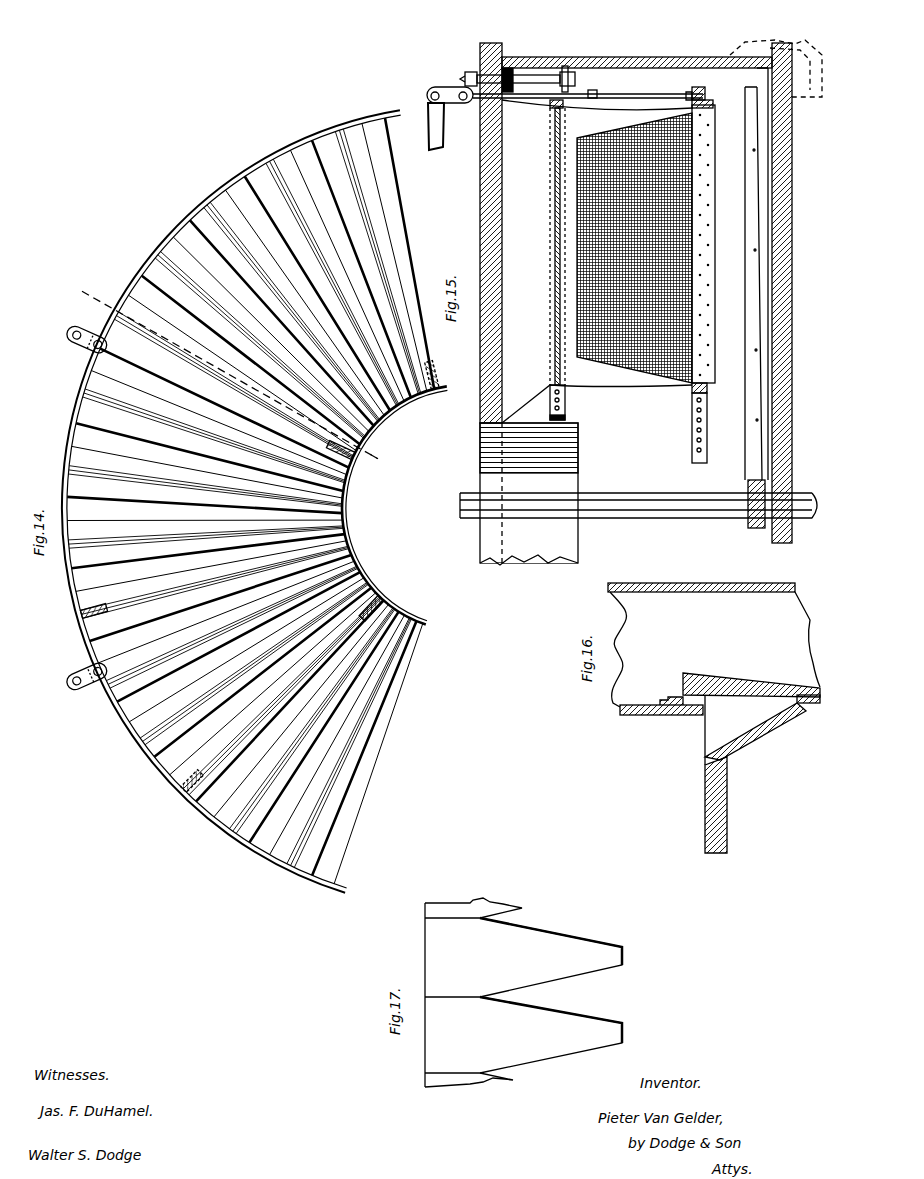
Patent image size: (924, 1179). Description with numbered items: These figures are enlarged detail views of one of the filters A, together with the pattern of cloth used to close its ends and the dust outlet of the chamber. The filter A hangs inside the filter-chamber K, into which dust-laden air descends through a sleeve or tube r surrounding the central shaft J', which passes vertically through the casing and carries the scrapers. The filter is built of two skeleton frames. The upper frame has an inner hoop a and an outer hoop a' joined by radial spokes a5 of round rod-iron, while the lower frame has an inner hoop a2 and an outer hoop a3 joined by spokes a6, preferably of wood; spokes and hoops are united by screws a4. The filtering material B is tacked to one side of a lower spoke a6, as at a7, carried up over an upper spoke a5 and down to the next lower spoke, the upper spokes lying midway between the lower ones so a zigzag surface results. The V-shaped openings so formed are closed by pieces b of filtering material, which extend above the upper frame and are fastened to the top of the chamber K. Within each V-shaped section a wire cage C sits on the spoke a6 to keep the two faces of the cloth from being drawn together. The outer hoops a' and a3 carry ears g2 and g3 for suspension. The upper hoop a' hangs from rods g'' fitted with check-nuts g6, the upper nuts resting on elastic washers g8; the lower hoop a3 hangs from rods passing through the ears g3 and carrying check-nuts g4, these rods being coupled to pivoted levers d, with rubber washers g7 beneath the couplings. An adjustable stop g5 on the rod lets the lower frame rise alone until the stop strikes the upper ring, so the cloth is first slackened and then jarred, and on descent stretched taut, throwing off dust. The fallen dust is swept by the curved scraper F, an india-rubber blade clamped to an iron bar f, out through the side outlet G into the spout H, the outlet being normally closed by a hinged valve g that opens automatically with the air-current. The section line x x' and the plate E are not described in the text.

In FIG. 14, the inner ring or hoop of upper frame a is at (247, 504).
In FIG. 15, the inner ring or hoop of upper frame a is at (542, 405).
In FIG. 14, the outer ring or hoop of upper frame a' is at (254, 501).
In FIG. 15, the outer ring or hoop of upper frame a' is at (549, 242).
In FIG. 14, the inner hoop of lower frame a2 is at (82, 613).
In FIG. 15, the inner hoop of lower frame a2 is at (708, 390).
In FIG. 15, the outer hoop or ring of lower frame a3 is at (712, 100).
In FIG. 14, the screws a4 is at (343, 457).
In FIG. 15, the screws a4 is at (692, 420).
In FIG. 14, the radial spokes or bars of upper frame a5 is at (244, 498).
In FIG. 15, the radial spokes or bars of upper frame a5 is at (556, 250).
In FIG. 14, the spokes or bars of lower frame a6 is at (250, 496).
In FIG. 15, the spokes or bars of lower frame a6 is at (715, 128).
In FIG. 15, the tacked end of filtering material a7 is at (716, 228).
In FIG. 15, the filter A is at (636, 293).
In FIG. 15, the filtering material B is at (622, 386).
In FIG. 15, the cage C is at (634, 248).
In FIG. 15, the plate E is at (745, 180).
In FIG. 15, the curved scraper F is at (750, 470).
In FIG. 15, the iron arm or bar f is at (748, 95).
In FIG. 15, the side opening or outlet G is at (776, 68).
In FIG. 16, the side opening or outlet G is at (762, 774).
In FIG. 16, the hinged valve g is at (751, 677).
In FIG. 14, the ears of upper hoop g2 is at (84, 322).
In FIG. 15, the ears of upper hoop g2 is at (565, 66).
In FIG. 15, the ears of lower hoop g3 is at (686, 94).
In FIG. 15, the check-nuts g4 is at (698, 84).
In FIG. 15, the adjustable block or stop g5 is at (594, 90).
In FIG. 15, the check-nuts g6 is at (463, 74).
In FIG. 15, the rubber washers g7 is at (472, 104).
In FIG. 15, the elastic washers g8 is at (471, 72).
In FIG. 15, the rods g'' is at (518, 64).
In FIG. 16, the spout H is at (714, 645).
In FIG. 15, the central shaft J' is at (638, 495).
In FIG. 15, the filter-chamber K is at (600, 57).
In FIG. 16, the filter-chamber K is at (650, 715).
In FIG. 15, the pieces of filtering material b is at (512, 104).
In FIG. 17, the pieces of filtering material b is at (523, 992).
In FIG. 15, the pivoted arm or lever d is at (640, 94).
In FIG. 15, the sleeve or tube r is at (578, 460).
In FIG. 14, the section line x is at (226, 367).
In FIG. 14, the section line x' is at (384, 464).